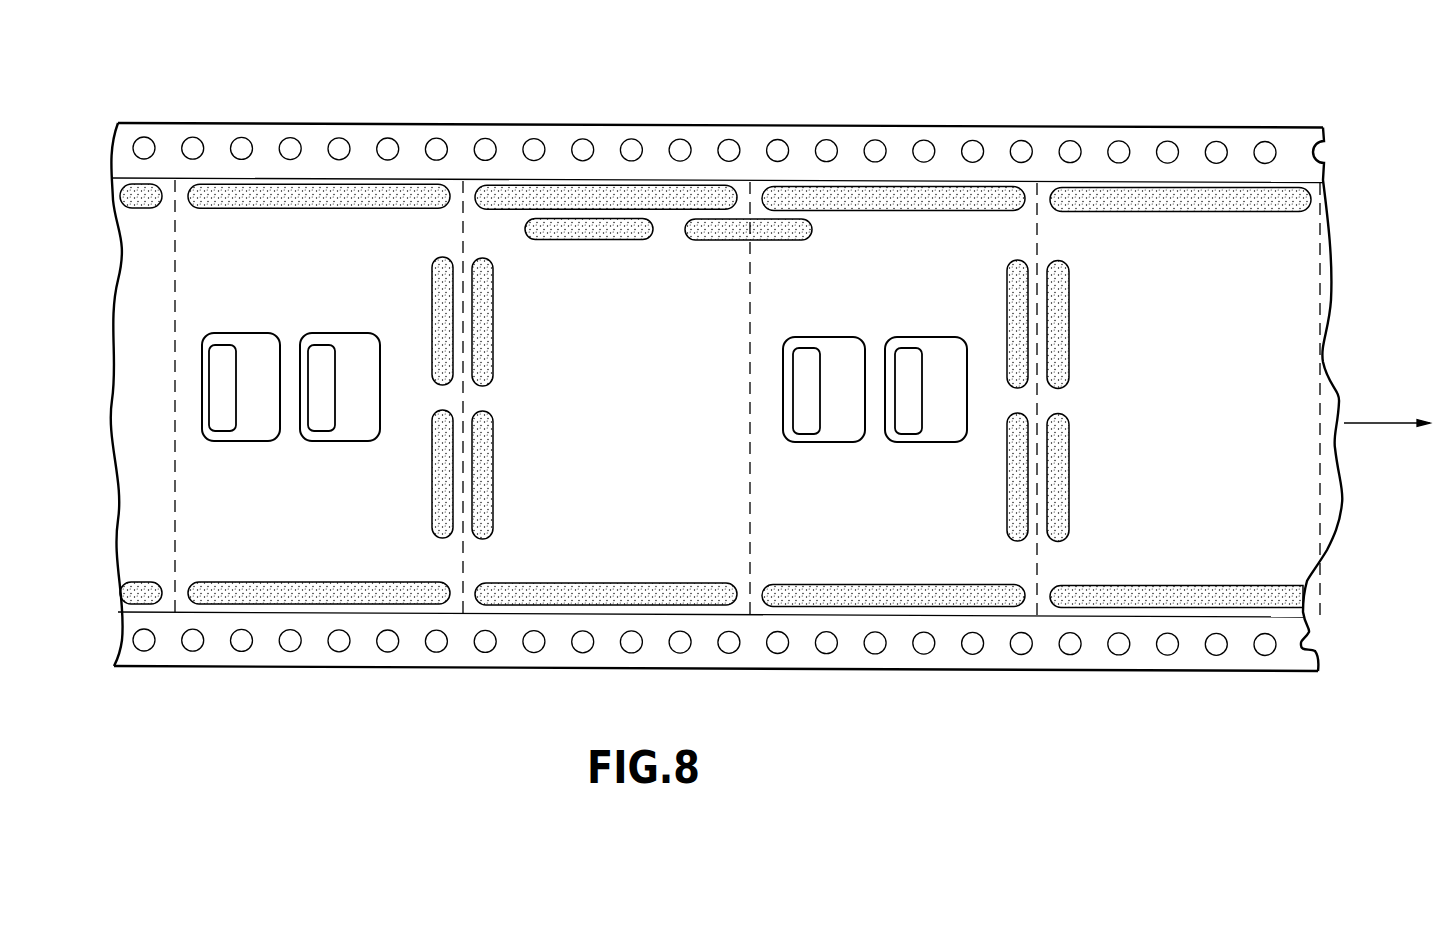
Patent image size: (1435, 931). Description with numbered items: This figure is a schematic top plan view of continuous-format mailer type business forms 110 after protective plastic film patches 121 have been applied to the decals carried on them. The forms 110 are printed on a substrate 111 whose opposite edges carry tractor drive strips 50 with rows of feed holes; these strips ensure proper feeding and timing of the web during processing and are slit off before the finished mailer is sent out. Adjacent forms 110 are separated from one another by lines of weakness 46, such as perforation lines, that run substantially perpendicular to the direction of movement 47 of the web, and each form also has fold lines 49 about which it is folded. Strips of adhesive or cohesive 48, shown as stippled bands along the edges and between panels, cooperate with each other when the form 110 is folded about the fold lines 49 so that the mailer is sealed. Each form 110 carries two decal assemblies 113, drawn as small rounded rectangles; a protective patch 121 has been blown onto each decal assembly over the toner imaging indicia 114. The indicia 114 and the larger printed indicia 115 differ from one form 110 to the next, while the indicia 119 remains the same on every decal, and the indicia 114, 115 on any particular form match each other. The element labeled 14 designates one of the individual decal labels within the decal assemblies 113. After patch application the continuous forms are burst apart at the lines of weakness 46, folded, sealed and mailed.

The mailer type business forms 110 is at (764, 452).
The substrate 111 is at (513, 553).
The tractor drive strips 50 is at (1048, 147).
The fold lines 49 is at (175, 225).
The lines of weakness 46 is at (463, 220).
The strips of adhesive or cohesive 48 is at (493, 300).
The decal assemblies 113 is at (875, 335).
The label 14 is at (900, 345).
The indicia 114 is at (565, 390).
The protective patches 121 is at (808, 342).
The indicia 119 is at (367, 432).
The indicia 115 is at (166, 464).
The direction of movement 47 is at (1375, 423).